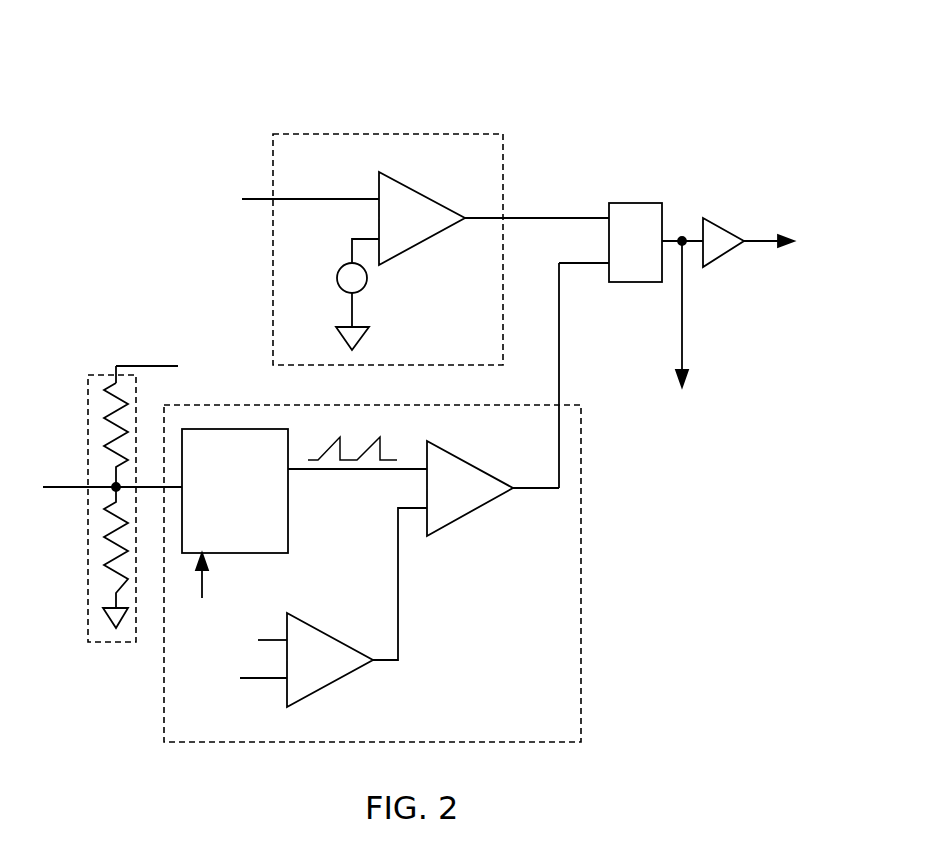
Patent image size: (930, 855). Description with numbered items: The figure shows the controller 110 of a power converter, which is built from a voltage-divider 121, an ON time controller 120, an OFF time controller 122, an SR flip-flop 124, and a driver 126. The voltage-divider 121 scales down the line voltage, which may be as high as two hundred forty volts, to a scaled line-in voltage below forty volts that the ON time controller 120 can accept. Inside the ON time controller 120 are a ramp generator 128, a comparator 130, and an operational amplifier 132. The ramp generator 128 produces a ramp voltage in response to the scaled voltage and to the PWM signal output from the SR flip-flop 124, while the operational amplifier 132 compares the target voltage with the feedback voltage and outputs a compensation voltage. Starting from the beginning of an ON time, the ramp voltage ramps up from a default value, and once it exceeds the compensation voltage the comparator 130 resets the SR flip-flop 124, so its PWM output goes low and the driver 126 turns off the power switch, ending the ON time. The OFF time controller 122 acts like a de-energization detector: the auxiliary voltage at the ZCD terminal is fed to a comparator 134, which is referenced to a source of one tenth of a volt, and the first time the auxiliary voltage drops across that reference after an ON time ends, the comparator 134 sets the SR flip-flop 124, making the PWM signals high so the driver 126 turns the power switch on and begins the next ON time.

The controller 110 is at (172, 76).
The ON time controller 120 is at (581, 537).
The voltage-divider 121 is at (126, 643).
The OFF time controller 122 is at (400, 134).
The SR flip-flop 124 is at (633, 203).
The driver 126 is at (710, 218).
The ramp generator 128 is at (249, 527).
The comparator 130 is at (467, 458).
The operational amplifier 132 is at (325, 685).
The comparator 134 is at (418, 190).